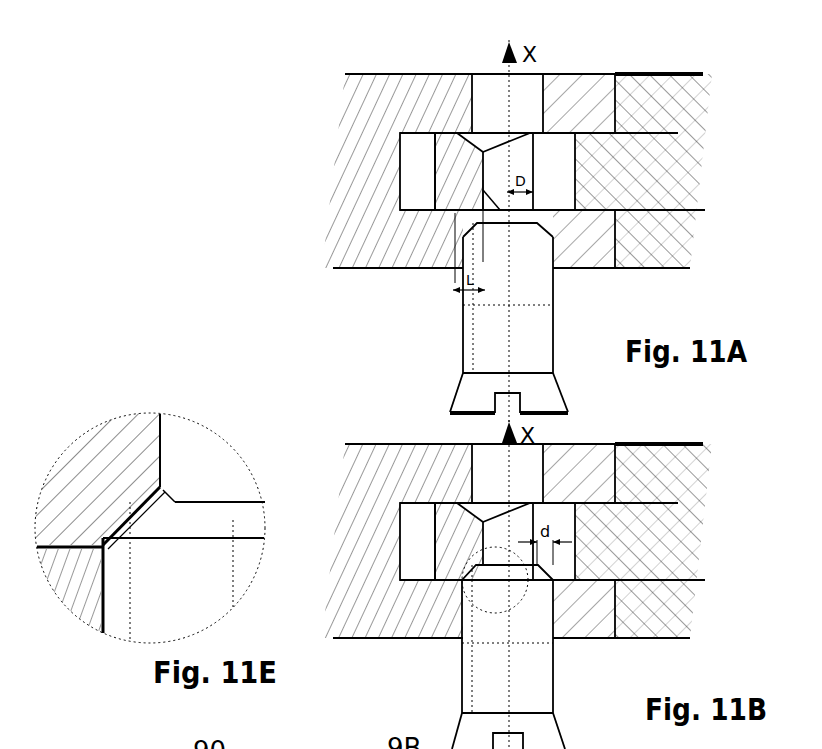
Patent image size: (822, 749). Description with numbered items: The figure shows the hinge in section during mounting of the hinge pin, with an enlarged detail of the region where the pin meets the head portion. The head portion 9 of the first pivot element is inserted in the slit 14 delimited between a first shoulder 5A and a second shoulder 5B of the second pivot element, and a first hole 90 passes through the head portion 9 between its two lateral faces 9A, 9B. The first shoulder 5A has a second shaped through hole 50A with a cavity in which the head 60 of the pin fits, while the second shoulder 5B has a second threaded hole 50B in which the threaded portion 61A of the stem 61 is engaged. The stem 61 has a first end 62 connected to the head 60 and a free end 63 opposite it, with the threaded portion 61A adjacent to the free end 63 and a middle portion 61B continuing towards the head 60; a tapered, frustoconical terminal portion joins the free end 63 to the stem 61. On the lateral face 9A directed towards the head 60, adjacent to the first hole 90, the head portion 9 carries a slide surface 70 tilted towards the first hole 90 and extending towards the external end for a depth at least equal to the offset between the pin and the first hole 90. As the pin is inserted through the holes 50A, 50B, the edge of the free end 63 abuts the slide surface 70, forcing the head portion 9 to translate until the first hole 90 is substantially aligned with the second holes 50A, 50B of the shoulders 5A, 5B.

In FIG. 11A, the head portion 9 is at (657, 175).
In FIG. 11B, the head portion 9 is at (663, 545).
In FIG. 11E, the head portion 9 is at (102, 450).
In FIG. 11A, the first hole 90 is at (553, 173).
In FIG. 11B, the first hole 90 is at (557, 517).
In FIG. 11E, the first hole 90 is at (178, 438).
In FIG. 11A, the slit 14 is at (420, 188).
In FIG. 11B, the slit 14 is at (418, 562).
In FIG. 11A, the slide surface 70 is at (480, 202).
In FIG. 11B, the slide surface 70 is at (473, 565).
In FIG. 11A, the free end 63 is at (493, 236).
In FIG. 11B, the free end 63 is at (495, 563).
In FIG. 11E, the free end 63 is at (200, 502).
In FIG. 11E, the stem 61 is at (207, 607).
In FIG. 11A, the threaded portion 61A is at (542, 282).
In FIG. 11B, the threaded portion 61A is at (546, 638).
In FIG. 11A, the middle portion 61B is at (542, 349).
In FIG. 11B, the middle portion 61B is at (546, 703).
In FIG. 11A, the first end 62 is at (463, 373).
In FIG. 11B, the first end 62 is at (462, 712).
In FIG. 11A, the head 60 is at (552, 397).
In FIG. 11B, the head 60 is at (553, 732).
In FIG. 11A, the second shaped through hole 50A is at (560, 257).
In FIG. 11B, the second shaped through hole 50A is at (560, 627).
In FIG. 11E, the second shaped through hole 50A is at (97, 610).
In FIG. 11A, the second threaded hole 50B is at (507, 107).
In FIG. 11B, the second threaded hole 50B is at (523, 473).
In FIG. 11A, the first shoulder 5A is at (445, 252).
In FIG. 11B, the first shoulder 5A is at (407, 632).
In FIG. 11E, the first shoulder 5A is at (80, 597).
In FIG. 11A, the second shoulder 5B is at (450, 97).
In FIG. 11B, the second shoulder 5B is at (415, 485).
In FIG. 11A, the lateral face 9A is at (443, 215).
In FIG. 11B, the lateral face 9A is at (447, 583).
In FIG. 11A, the lateral face 9B is at (442, 133).
In FIG. 11B, the lateral face 9B is at (445, 503).